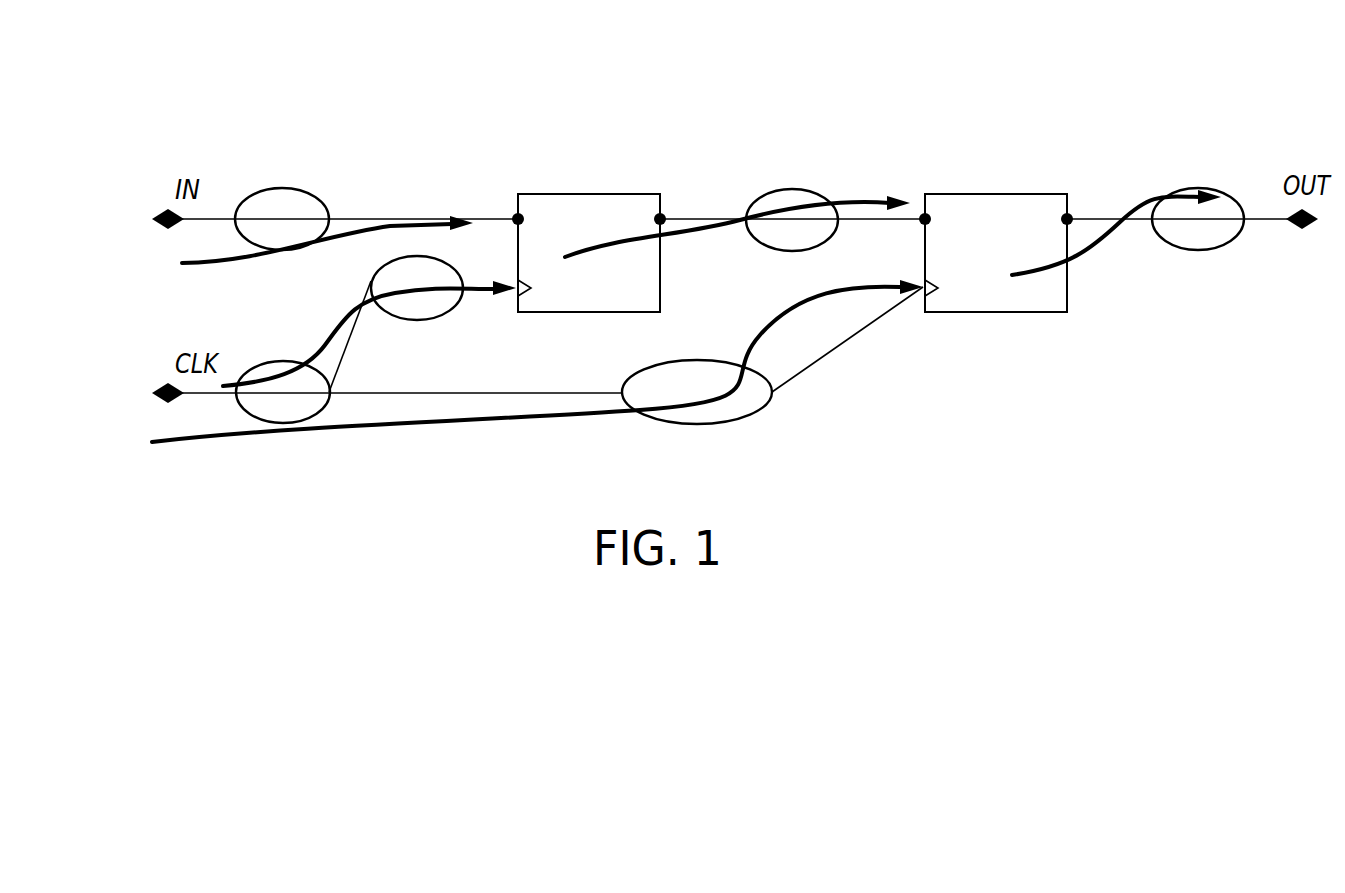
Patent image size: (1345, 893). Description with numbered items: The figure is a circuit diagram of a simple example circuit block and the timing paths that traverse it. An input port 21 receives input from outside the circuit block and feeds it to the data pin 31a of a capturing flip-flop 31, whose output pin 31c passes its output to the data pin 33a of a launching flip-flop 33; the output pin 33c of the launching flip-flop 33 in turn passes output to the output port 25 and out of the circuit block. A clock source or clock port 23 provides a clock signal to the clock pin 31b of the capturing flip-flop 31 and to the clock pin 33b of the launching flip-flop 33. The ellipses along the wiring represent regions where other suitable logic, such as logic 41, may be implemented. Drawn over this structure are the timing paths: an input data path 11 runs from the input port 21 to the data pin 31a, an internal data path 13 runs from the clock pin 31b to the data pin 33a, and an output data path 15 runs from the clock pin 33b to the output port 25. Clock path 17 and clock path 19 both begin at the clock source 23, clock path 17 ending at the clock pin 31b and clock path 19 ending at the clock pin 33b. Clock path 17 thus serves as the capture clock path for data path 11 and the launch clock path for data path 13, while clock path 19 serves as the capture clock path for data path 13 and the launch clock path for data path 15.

The input data path 11 is at (380, 222).
The internal data path 13 is at (708, 228).
The output data path 15 is at (1185, 196).
The clock path 17 is at (337, 328).
The clock path 19 is at (443, 424).
The input port 21 is at (163, 210).
The clock port 23 is at (163, 385).
The output port 25 is at (1300, 230).
The capturing flip-flop 31 is at (572, 244).
The data pin 31a is at (536, 196).
The clock pin 31b is at (553, 313).
The output pin 31c is at (650, 195).
The launching flip-flop 33 is at (978, 244).
The data pin 33a is at (942, 196).
The clock pin 33b is at (957, 313).
The output pin 33c is at (1055, 195).
The logic 41 is at (285, 188).